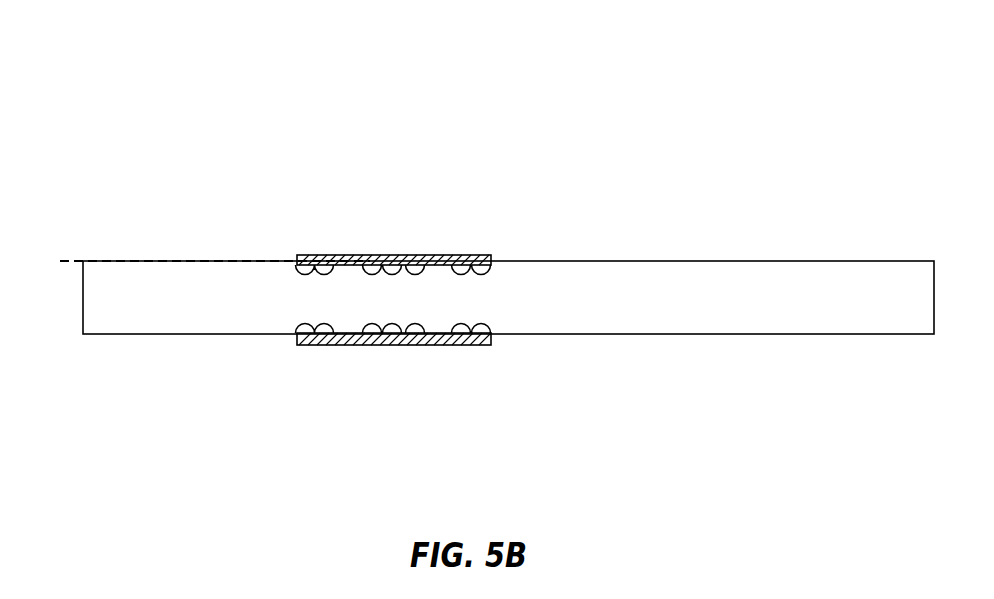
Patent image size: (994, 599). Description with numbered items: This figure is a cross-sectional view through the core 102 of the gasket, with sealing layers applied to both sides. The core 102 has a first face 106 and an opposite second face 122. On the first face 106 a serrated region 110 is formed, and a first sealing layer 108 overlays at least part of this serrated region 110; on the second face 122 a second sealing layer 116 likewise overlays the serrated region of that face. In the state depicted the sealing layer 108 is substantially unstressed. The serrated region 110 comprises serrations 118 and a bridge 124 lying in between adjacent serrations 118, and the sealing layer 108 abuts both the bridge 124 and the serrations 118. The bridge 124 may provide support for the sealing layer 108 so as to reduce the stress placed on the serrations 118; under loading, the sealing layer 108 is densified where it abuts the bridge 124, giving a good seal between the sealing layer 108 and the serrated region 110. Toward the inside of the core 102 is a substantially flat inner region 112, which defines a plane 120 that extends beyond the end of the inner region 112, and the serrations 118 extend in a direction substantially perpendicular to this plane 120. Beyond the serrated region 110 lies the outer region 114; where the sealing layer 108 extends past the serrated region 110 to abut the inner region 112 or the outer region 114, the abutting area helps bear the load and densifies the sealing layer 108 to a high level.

The core 102 is at (255, 110).
The first face 106 is at (692, 250).
The first sealing layer 108 is at (408, 253).
The serrated region 110 is at (442, 238).
The inner region 112 is at (193, 233).
The outer region 114 is at (803, 242).
The second sealing layer 116 is at (358, 347).
The serrations 118 is at (478, 252).
The plane 120 is at (92, 260).
The second face 122 is at (713, 360).
The bridge 124 is at (347, 253).